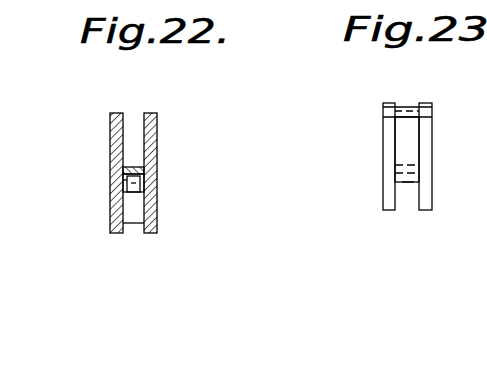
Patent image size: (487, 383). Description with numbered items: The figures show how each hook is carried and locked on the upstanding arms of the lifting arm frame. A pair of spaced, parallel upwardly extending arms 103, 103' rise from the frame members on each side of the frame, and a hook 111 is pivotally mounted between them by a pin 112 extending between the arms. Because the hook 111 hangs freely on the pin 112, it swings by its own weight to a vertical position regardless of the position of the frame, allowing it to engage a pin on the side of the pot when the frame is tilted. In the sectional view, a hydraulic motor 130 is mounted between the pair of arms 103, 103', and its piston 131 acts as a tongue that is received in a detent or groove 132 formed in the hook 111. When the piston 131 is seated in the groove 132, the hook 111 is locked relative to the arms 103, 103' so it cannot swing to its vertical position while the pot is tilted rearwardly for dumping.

In FIG. 22, the upwardly extending arm 103 is at (85, 173).
In FIG. 23, the upwardly extending arm 103 is at (358, 156).
In FIG. 22, the upwardly extending arm 103' is at (190, 163).
In FIG. 23, the upwardly extending arm 103' is at (453, 156).
In FIG. 22, the hook 111 is at (133, 167).
In FIG. 23, the hook 111 is at (410, 158).
In FIG. 23, the pin 112 is at (407, 103).
In FIG. 22, the hydraulic motor 130 is at (135, 216).
In FIG. 22, the piston 131 is at (136, 189).
In FIG. 22, the detent or groove 132 is at (127, 183).
In FIG. 23, the detent or groove 132 is at (409, 182).